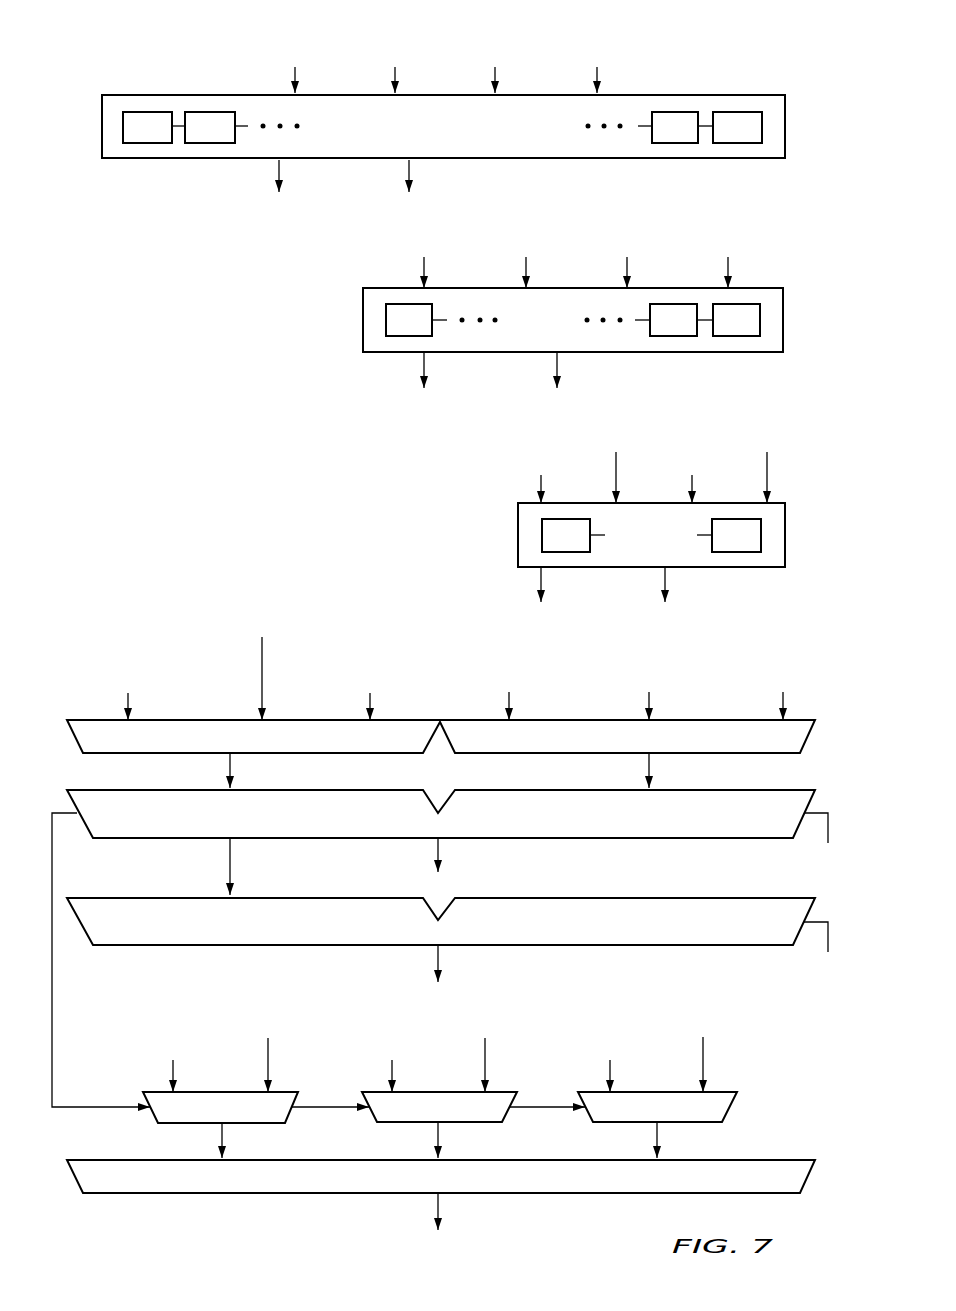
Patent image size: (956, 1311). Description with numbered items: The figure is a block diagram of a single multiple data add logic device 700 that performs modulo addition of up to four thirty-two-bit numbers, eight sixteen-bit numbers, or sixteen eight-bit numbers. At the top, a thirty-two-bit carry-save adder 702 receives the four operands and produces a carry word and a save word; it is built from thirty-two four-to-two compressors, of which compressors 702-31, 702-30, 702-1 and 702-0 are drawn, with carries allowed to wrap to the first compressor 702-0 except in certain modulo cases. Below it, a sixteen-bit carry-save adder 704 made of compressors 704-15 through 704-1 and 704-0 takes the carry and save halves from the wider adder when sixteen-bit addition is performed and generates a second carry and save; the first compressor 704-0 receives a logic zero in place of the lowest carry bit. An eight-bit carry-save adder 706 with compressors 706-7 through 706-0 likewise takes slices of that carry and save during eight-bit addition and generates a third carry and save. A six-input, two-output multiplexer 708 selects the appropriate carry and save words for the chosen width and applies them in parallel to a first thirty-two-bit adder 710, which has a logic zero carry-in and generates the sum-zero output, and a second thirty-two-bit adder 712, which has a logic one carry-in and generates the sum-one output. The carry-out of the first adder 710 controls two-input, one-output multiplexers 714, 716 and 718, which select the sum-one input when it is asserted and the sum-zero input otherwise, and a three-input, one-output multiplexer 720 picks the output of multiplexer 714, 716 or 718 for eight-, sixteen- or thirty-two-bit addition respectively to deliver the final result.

The single multiple data add (SMAD) logic device 700 is at (178, 63).
The 32-bit carry-save adder 702 is at (431, 141).
The 4:2 compressor 702-31 is at (123, 132).
The 4:2 compressor 702-30 is at (205, 143).
The 4:2 compressor 702-1 is at (670, 143).
The 4:2 compressor 702-0 is at (762, 135).
The 16-bit carry-save adder 704 is at (548, 326).
The 4:2 compressor 704-15 is at (386, 330).
The 4:2 compressor 704-1 is at (673, 336).
The 4:2 compressor 704-0 is at (760, 323).
The 8-bit carry-save adder 706 is at (639, 543).
The 4:2 compressor 706-7 is at (542, 543).
The 4:2 compressor 706-0 is at (737, 552).
The 6-input/2-output multiplexer 708 is at (374, 754).
The first 32-bit adder 710 is at (369, 839).
The second 32-bit adder 712 is at (370, 946).
The 2-input/1-output multiplexer 714 is at (257, 1124).
The 2-input/1-output multiplexer 716 is at (480, 1123).
The 2-input/1-output multiplexer 718 is at (693, 1123).
The 3-input/1-output multiplexer 720 is at (248, 1194).